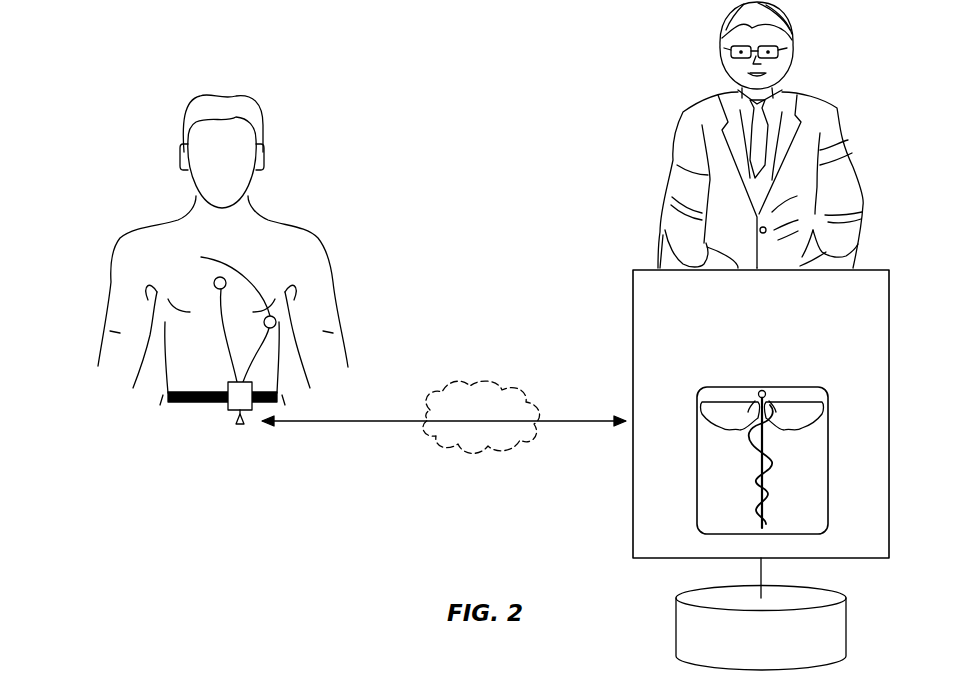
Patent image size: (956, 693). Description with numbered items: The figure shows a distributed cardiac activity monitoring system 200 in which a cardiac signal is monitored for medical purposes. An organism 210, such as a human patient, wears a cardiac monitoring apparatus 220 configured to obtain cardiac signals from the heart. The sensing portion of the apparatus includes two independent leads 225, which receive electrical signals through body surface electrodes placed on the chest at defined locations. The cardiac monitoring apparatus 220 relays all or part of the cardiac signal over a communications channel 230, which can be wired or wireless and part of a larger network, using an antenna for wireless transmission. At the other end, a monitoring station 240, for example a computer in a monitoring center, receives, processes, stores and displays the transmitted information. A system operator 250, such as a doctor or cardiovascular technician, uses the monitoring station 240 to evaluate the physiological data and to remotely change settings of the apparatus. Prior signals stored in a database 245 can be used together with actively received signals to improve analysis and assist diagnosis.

The distributed cardiac activity monitoring system 200 is at (118, 136).
The organism 210 is at (288, 224).
The cardiac monitoring apparatus 220 is at (232, 414).
The independent leads 225 is at (217, 277).
The communications channel 230 is at (384, 422).
The monitoring station 240 is at (633, 521).
The database 245 is at (685, 598).
The system operator 250 is at (816, 96).